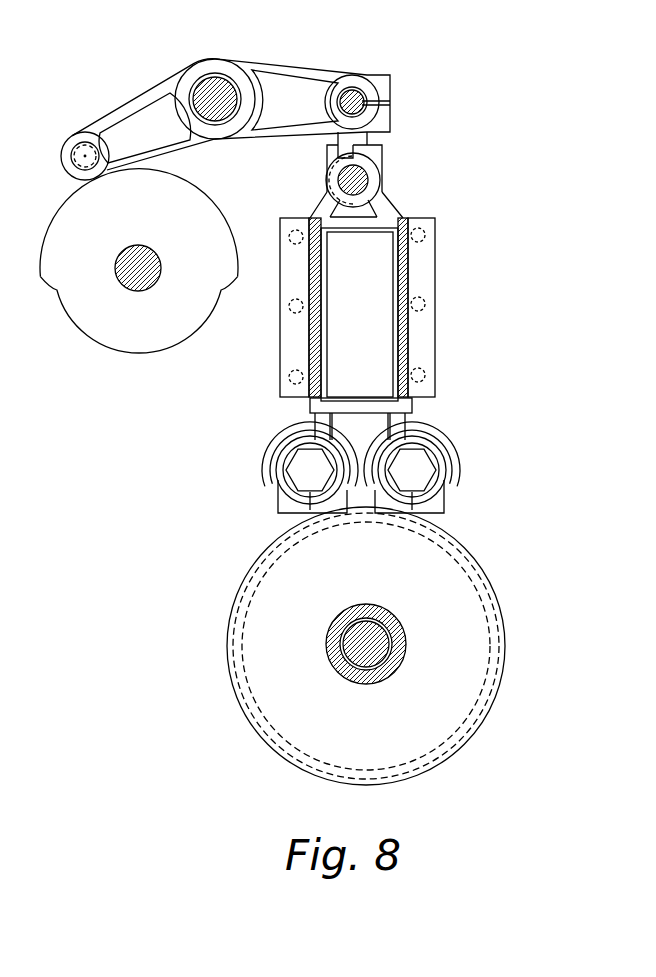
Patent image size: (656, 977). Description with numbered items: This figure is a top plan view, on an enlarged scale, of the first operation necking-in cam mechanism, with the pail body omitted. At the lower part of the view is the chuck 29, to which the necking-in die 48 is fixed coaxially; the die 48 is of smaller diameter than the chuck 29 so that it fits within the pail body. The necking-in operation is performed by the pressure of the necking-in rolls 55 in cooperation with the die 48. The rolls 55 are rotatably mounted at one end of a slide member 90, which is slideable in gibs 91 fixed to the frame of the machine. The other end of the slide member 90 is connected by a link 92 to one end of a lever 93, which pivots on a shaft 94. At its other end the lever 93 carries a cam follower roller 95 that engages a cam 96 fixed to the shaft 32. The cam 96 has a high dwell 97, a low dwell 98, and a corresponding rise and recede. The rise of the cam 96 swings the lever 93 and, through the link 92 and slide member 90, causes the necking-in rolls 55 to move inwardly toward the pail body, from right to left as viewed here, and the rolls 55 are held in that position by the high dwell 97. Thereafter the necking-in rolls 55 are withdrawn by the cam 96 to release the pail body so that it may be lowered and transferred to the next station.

The chuck 29 is at (392, 646).
The shaft 32 is at (158, 266).
The necking-in die 48 is at (506, 645).
The necking-in rolls 55 is at (281, 438).
The slide member 90 is at (394, 206).
The gibs 91 is at (287, 331).
The link 92 is at (383, 146).
The lever 93 is at (296, 64).
The shaft 94 is at (220, 86).
The cam follower roller 95 is at (74, 133).
The cam 96 is at (133, 273).
The high dwell 97 is at (67, 203).
The low dwell 98 is at (172, 343).